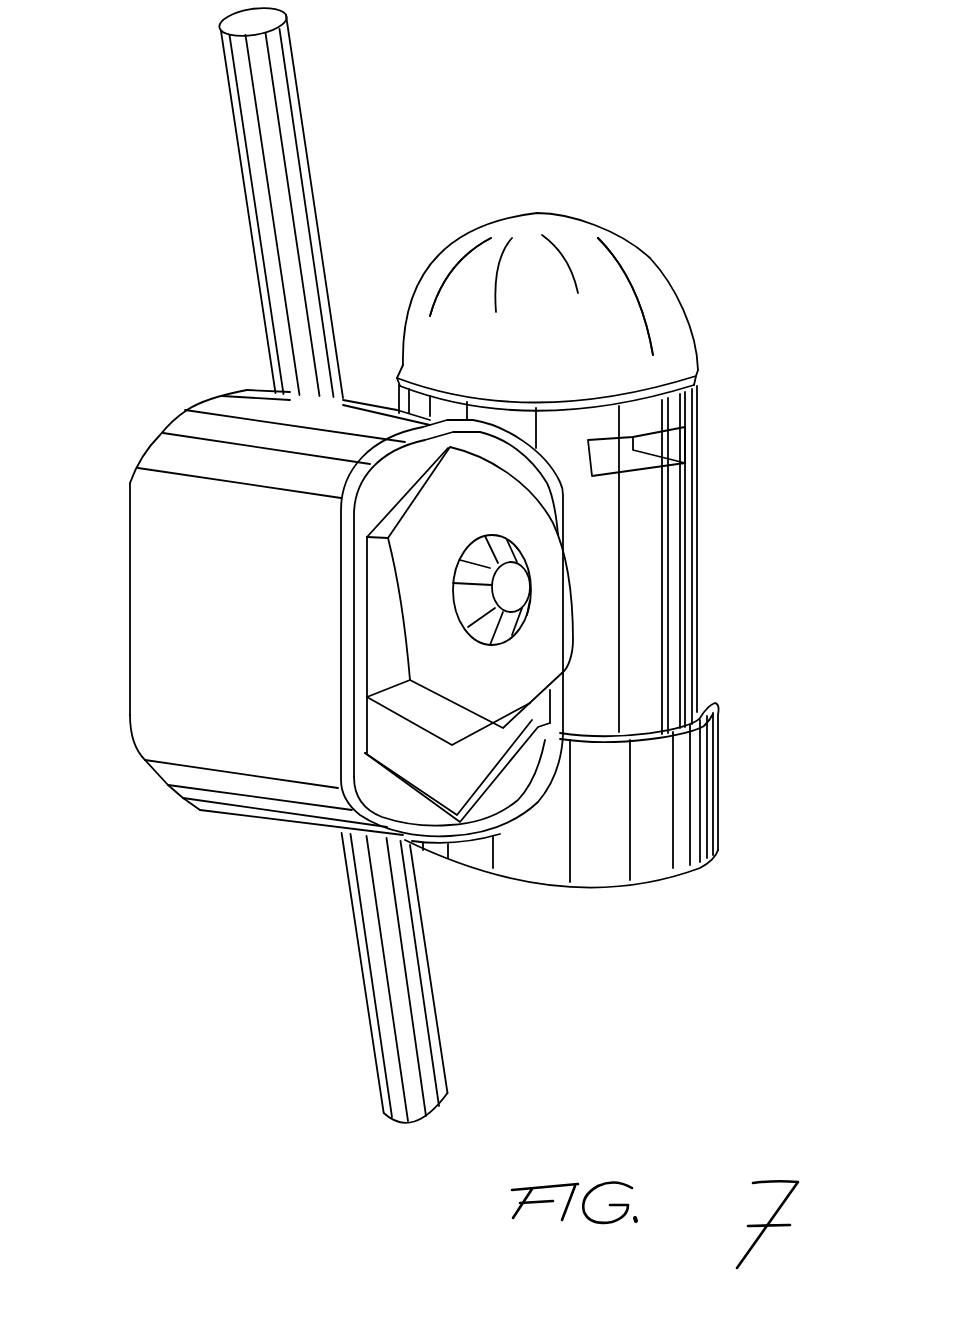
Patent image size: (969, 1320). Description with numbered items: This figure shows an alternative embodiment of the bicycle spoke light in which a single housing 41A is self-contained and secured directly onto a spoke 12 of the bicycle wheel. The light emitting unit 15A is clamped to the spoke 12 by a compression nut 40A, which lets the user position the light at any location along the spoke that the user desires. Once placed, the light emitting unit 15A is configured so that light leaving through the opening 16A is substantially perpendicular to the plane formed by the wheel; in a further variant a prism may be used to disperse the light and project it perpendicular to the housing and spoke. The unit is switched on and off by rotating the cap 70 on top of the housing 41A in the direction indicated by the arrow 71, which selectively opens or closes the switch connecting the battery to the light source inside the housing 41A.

The spoke 12 is at (270, 126).
The light emitting unit 15A is at (205, 420).
The opening 16A is at (667, 447).
The compression nut 40A is at (475, 687).
The housing 41A is at (648, 648).
The cap 70 is at (710, 322).
The arrow 71 is at (632, 342).